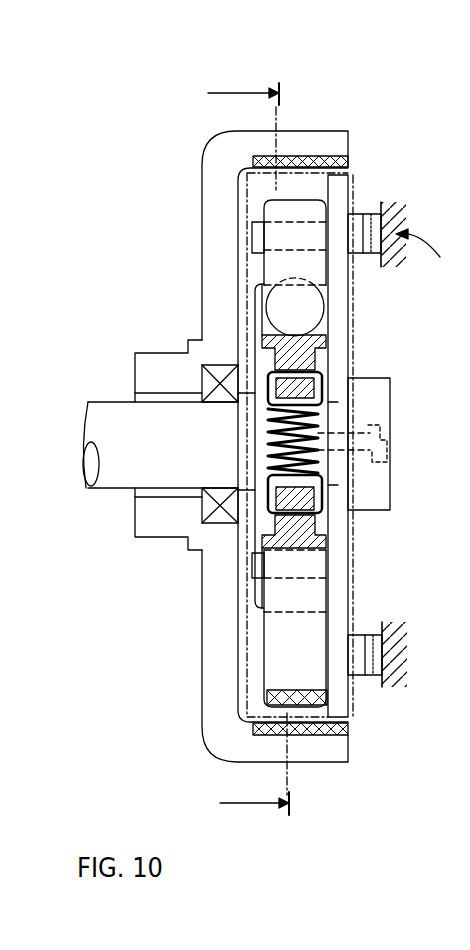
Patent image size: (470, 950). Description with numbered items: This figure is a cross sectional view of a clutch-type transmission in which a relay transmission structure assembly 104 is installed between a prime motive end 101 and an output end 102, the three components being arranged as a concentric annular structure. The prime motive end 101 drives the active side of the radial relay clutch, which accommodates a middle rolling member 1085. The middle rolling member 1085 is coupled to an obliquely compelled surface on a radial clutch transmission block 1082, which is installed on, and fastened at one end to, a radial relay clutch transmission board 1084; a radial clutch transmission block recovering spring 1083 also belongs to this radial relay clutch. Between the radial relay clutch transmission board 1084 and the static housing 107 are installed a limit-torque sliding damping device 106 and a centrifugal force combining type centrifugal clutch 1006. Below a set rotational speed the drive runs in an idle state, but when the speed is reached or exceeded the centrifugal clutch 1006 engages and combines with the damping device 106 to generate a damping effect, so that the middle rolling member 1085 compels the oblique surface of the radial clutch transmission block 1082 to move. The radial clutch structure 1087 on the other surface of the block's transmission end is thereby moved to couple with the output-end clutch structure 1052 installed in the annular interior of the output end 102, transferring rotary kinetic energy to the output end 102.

The prime motive end 101 is at (120, 470).
The output end 102 is at (163, 365).
The relay transmission structure assembly 104 is at (247, 313).
The limit-torque sliding damping device 106 is at (372, 212).
The static housing 107 is at (430, 259).
The centrifugal force combining type centrifugal clutch 1006 is at (353, 217).
The output-end clutch structure 1052 is at (313, 160).
The radial clutch transmission block 1082 is at (280, 268).
The radial clutch transmission block recovering spring 1083 is at (315, 458).
The radial relay clutch transmission board 1084 is at (337, 375).
The middle rolling member 1085 is at (303, 280).
The radial clutch structure 1087 is at (297, 690).